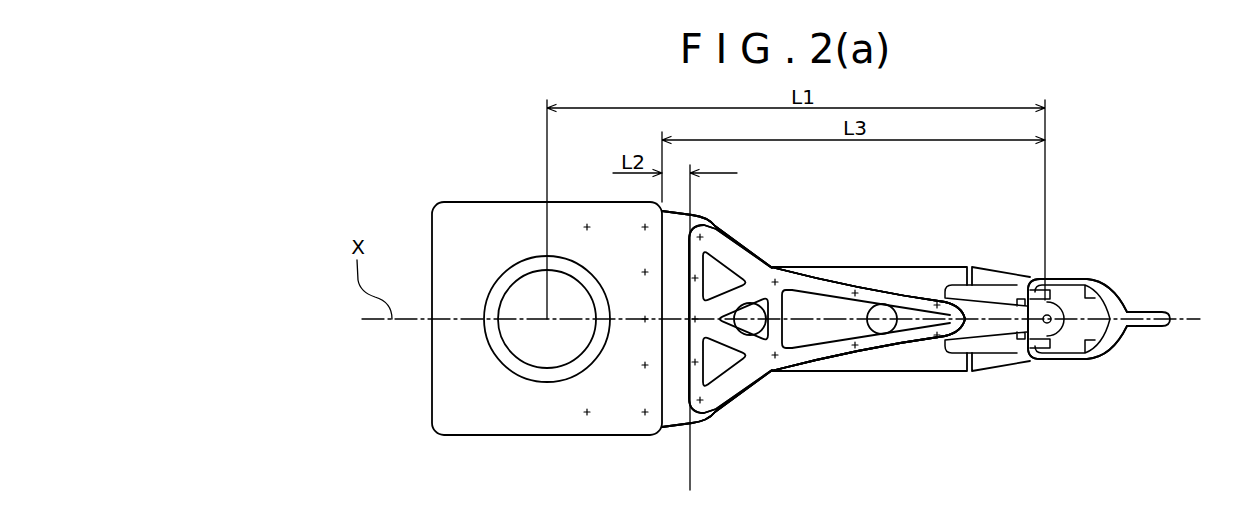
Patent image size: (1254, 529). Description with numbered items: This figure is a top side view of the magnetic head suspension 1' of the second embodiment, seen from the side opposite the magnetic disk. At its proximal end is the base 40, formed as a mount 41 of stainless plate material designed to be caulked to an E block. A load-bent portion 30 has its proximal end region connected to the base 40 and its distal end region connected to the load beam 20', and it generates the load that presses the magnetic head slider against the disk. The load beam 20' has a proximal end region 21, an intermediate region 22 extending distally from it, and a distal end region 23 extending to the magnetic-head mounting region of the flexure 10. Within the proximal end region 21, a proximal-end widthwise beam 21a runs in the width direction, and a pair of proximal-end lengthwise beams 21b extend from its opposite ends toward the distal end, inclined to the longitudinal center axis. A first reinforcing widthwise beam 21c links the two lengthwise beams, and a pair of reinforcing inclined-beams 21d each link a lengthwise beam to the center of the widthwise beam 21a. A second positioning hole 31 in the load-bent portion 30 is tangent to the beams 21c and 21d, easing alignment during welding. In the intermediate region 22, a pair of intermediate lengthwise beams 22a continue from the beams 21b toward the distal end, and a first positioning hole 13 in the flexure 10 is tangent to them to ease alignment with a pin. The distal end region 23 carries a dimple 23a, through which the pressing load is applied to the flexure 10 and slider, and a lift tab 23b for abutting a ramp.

The magnetic head suspension 1' is at (949, 263).
The flexure 10 is at (1011, 252).
The first positioning hole 13 is at (892, 315).
The load beam 20' is at (813, 319).
The proximal end region 21 is at (689, 490).
The proximal-end widthwise beam 21a is at (690, 334).
The proximal-end lengthwise beams 21b is at (722, 252).
The first reinforcing widthwise beam 21c is at (788, 311).
The reinforcing inclined-beams 21d is at (727, 292).
The intermediate region 22 is at (775, 490).
The intermediate lengthwise beams 22a is at (838, 290).
The distal end region 23 is at (965, 490).
The dimple 23a is at (1047, 317).
The lift tab 23b is at (1163, 308).
The load-bent portion 30 is at (752, 231).
The second positioning hole 31 is at (760, 328).
The base 40 is at (475, 184).
The mount 41 is at (547, 319).